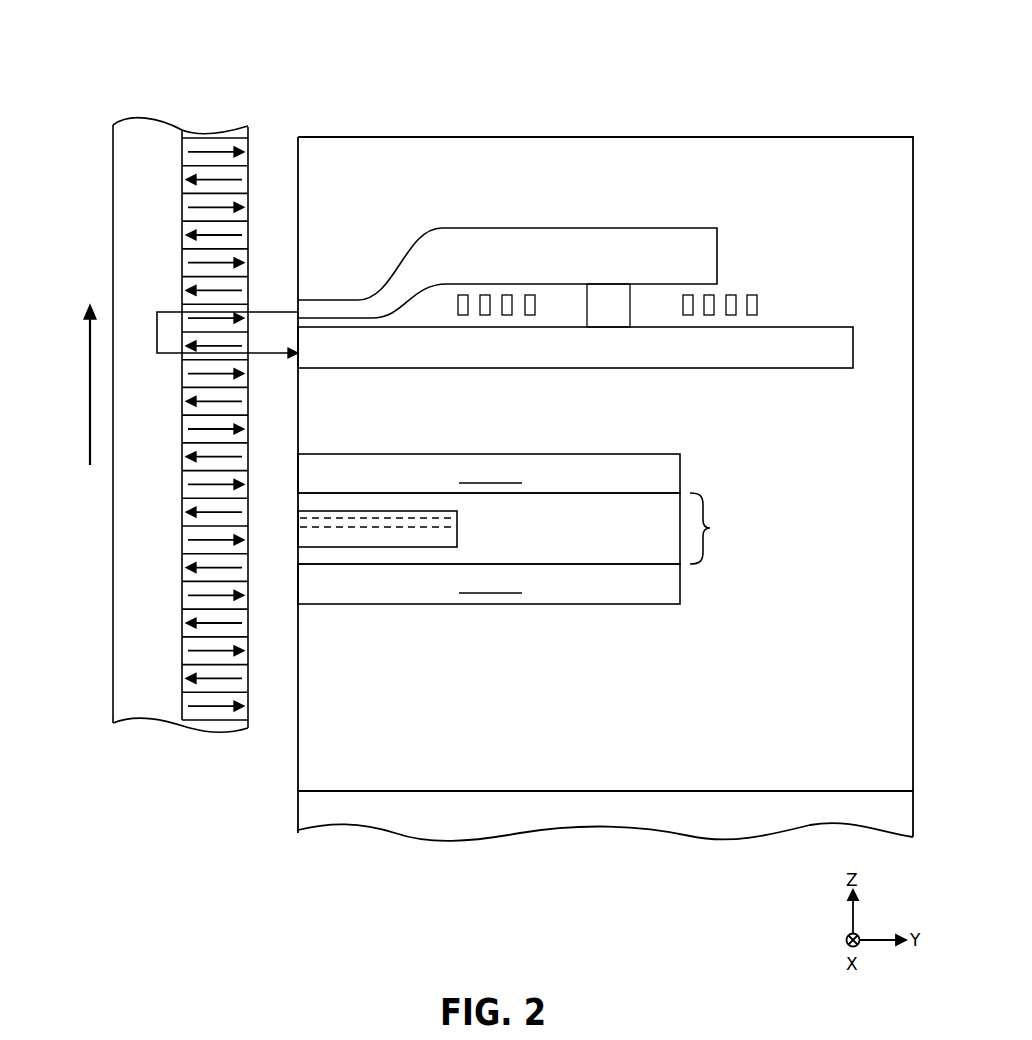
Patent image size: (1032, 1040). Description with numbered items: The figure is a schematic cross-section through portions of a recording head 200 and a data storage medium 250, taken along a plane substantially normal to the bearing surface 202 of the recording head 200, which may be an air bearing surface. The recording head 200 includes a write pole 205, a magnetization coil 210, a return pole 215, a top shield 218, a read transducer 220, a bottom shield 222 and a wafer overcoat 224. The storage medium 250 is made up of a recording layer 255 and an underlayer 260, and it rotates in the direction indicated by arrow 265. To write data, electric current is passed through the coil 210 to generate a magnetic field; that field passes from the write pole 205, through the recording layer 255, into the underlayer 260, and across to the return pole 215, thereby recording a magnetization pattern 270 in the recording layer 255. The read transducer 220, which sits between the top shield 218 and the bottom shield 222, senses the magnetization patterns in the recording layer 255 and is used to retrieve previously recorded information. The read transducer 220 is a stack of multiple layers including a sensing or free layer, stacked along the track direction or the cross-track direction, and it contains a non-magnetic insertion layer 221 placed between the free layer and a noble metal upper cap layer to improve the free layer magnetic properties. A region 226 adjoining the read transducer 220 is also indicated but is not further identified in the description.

The recording head 200 is at (745, 100).
The bearing surface 202 is at (298, 761).
The write pole 205 is at (350, 298).
The magnetization coil 210 is at (509, 294).
The return pole 215 is at (512, 346).
The top shield 218 is at (585, 478).
The read transducer 220 is at (710, 528).
The non-magnetic insertion layer 221 is at (357, 522).
The bottom shield 222 is at (606, 583).
The wafer overcoat 224 is at (836, 423).
The read gap 226 is at (628, 503).
The data storage medium 250 is at (158, 726).
The recording layer 255 is at (206, 135).
The underlayer 260 is at (133, 700).
The arrow 265 is at (90, 390).
The magnetization pattern 270 is at (222, 150).